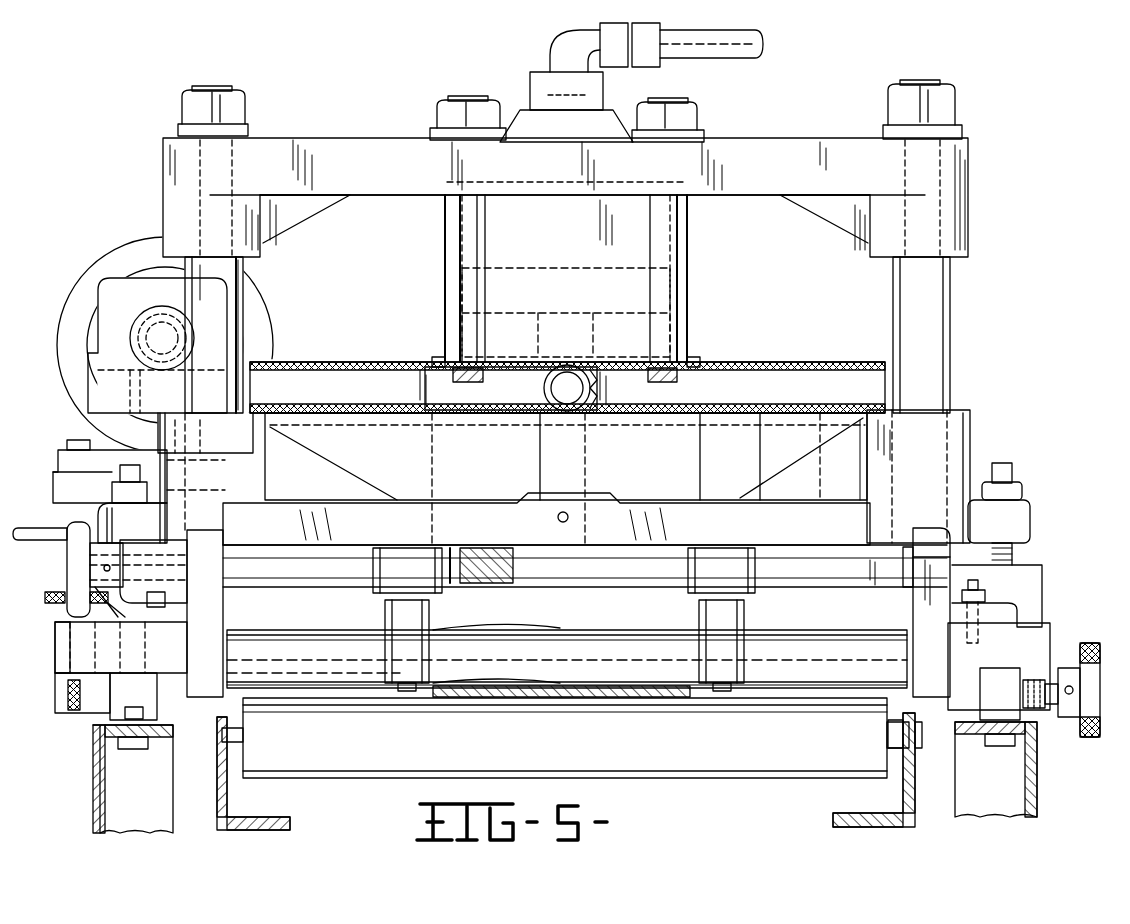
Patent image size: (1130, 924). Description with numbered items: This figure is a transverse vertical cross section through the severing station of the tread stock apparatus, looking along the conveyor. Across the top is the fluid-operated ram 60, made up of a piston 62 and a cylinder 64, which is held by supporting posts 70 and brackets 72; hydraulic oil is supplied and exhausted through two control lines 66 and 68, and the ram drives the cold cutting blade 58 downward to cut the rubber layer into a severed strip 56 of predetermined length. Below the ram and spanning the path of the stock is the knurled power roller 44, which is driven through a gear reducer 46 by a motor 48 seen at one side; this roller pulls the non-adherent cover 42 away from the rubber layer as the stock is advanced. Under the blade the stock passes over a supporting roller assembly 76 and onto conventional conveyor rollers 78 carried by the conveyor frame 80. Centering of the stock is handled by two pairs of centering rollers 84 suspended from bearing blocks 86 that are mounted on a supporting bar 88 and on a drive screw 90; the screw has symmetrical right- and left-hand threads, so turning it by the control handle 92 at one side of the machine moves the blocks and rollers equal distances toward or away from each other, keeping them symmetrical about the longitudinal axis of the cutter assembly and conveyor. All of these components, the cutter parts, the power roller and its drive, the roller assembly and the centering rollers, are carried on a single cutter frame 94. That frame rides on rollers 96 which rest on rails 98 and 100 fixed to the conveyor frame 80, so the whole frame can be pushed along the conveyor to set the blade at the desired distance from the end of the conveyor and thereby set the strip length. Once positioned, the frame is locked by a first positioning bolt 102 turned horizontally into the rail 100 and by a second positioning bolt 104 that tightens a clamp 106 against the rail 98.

The cover 42 is at (697, 452).
The knurled power roller 44 is at (745, 362).
The gear reducer 46 is at (130, 326).
The motor 48 is at (108, 256).
The severed strip 56 is at (574, 671).
The cold cutting blade 58 is at (566, 609).
The fluid-operated ram 60 is at (696, 237).
The piston 62 is at (582, 268).
The cylinder 64 is at (688, 266).
The control line 66 is at (565, 52).
The control line 68 is at (546, 388).
The supporting post 70 is at (250, 258).
The bracket 72 is at (1040, 570).
The supporting roller assembly 76 is at (792, 696).
The conveyor roller 78 is at (664, 778).
The conveyor frame 80 is at (95, 783).
The centering roller 84 is at (385, 617).
The bearing block 86 is at (370, 578).
The supporting bar 88 is at (295, 553).
The drive screw 90 is at (530, 553).
The control handle 92 is at (64, 572).
The frame 94 is at (135, 449).
The roller 96 is at (118, 658).
The rail 98 is at (148, 675).
The rail 100 is at (1023, 672).
The first positioning bolt 102 is at (1060, 705).
The second positioning bolt 104 is at (58, 645).
The clamp 106 is at (58, 692).